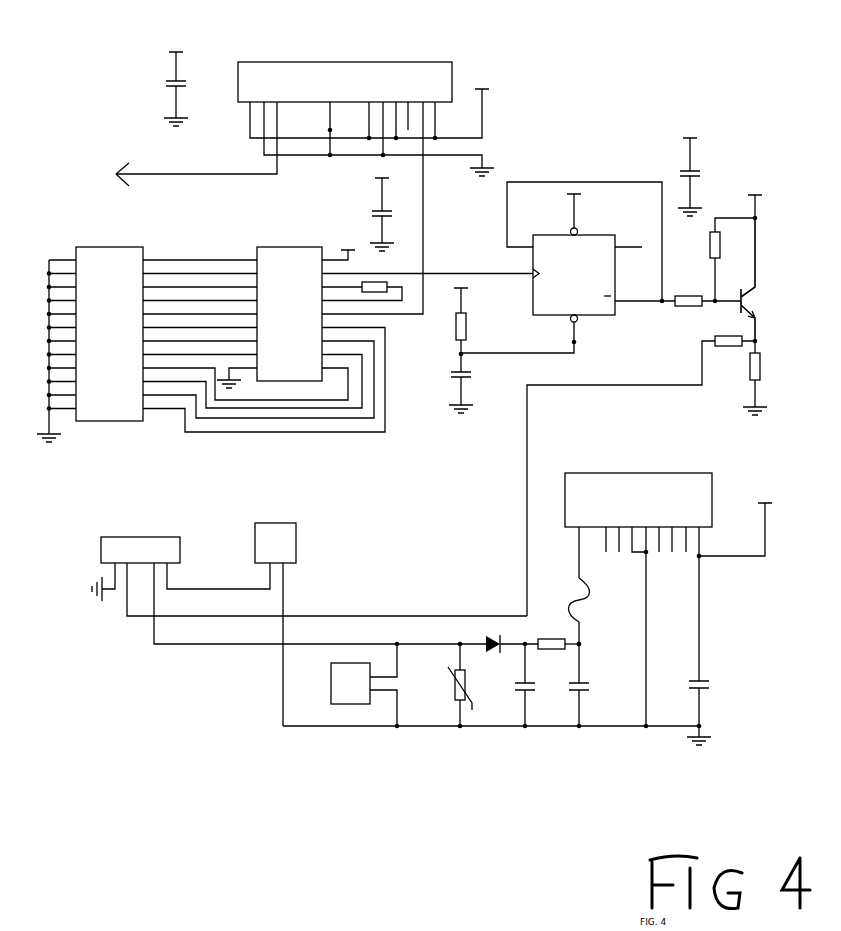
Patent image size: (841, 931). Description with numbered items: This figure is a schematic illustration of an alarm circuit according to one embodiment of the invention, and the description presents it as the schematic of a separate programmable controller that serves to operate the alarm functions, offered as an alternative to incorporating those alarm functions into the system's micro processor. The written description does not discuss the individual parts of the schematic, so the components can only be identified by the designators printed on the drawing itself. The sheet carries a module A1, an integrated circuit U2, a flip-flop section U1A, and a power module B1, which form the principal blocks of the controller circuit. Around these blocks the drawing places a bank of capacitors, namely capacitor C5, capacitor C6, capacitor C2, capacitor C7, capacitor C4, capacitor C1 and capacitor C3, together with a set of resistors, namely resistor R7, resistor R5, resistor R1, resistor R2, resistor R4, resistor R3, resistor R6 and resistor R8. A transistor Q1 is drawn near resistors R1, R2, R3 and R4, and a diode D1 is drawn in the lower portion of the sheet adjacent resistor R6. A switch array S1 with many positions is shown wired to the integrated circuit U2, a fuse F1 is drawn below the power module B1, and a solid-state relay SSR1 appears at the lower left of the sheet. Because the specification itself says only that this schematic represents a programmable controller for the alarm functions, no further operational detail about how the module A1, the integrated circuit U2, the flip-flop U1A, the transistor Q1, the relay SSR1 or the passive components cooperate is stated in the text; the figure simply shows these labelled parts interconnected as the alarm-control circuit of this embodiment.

The 0.1uF capacitor C5 is at (174, 83).
The AM-HRR3V6 receiver module A1 is at (305, 181).
The 0.1uF capacitor C6 is at (380, 209).
The S12 DIP switch S1 is at (211, 333).
The HT12F decoder U2 is at (375, 306).
The 51K resistor R7 is at (362, 289).
The 4.7K resistor R5 is at (461, 323).
The 4.7uF capacitor C2 is at (460, 392).
The DM74AS74M D flip-flop U1A is at (561, 267).
The 0.1uF capacitor C7 is at (687, 171).
The 10K resistor R1 is at (730, 242).
The 10K resistor R2 is at (678, 301).
The transistor Q1 is at (758, 279).
The 330 ohm resistor R4 is at (642, 470).
The 10K resistor R3 is at (755, 378).
The BP5034D5 power module B1 is at (669, 592).
The fuse F1 is at (585, 610).
The G3MB-202P solid state relay SSR1 is at (304, 583).
The varistor R8 is at (456, 685).
The diode D1 is at (512, 652).
The 10 ohm resistor R6 is at (559, 645).
The 10uF capacitor C4 is at (527, 686).
The 0.1uF capacitor C1 is at (579, 686).
The 100uF capacitor C3 is at (703, 706).